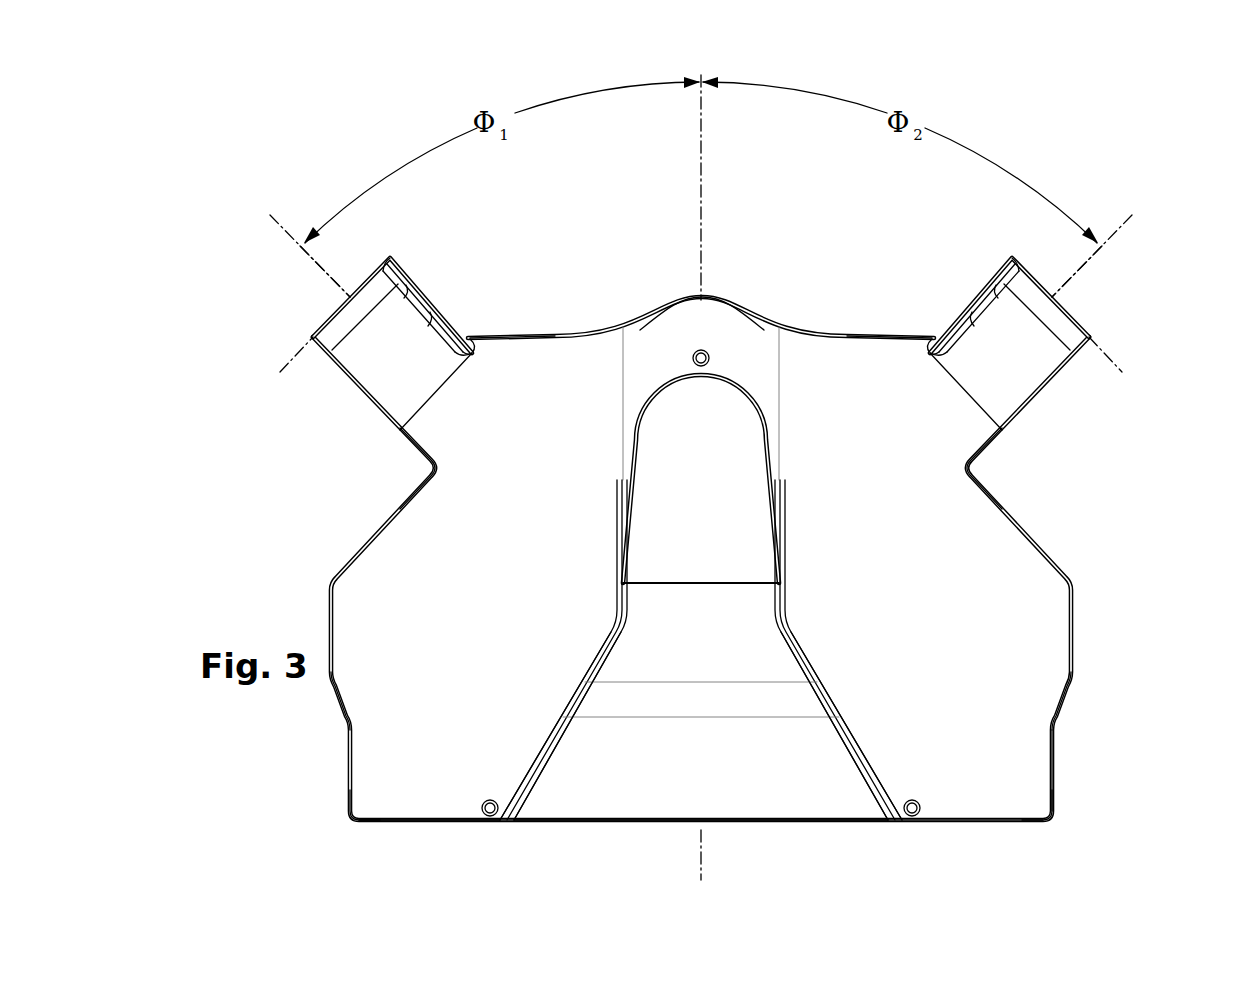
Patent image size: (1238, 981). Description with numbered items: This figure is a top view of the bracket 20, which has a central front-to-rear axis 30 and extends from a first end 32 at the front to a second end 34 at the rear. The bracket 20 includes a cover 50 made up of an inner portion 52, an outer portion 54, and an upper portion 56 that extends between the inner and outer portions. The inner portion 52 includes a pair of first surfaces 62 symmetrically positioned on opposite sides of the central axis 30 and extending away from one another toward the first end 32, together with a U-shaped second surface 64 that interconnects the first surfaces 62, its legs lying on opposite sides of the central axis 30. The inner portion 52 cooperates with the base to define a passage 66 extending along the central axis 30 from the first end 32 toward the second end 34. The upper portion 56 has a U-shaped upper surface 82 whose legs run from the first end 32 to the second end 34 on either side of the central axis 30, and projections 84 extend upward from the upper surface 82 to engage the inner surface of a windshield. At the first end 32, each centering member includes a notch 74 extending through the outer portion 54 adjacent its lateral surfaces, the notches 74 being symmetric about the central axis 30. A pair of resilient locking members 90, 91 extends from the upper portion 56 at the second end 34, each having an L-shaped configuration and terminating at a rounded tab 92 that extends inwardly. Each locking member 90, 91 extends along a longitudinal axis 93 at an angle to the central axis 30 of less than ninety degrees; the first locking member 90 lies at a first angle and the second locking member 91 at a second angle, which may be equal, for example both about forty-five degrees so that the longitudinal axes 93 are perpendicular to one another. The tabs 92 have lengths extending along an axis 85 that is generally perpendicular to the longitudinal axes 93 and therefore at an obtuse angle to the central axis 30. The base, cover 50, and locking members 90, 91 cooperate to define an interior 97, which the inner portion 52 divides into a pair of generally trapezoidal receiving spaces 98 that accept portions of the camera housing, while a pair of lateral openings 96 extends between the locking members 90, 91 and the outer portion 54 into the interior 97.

The bracket 20 is at (1105, 622).
The central front-to-rear axis 30 is at (703, 835).
The first end 32 is at (967, 827).
The second end 34 is at (640, 296).
The cover 50 is at (440, 773).
The inner portion 52 is at (800, 652).
The outer portion 54 is at (1060, 745).
The upper portion 56 is at (873, 345).
The first surfaces 62 is at (555, 742).
The second surface 64 is at (707, 380).
The passage 66 is at (648, 786).
The notch 74 is at (346, 793).
The upper surface 82 is at (720, 310).
The projections 84 is at (701, 345).
The axis 85 is at (425, 237).
The locking member 90 is at (395, 355).
The locking member 91 is at (1012, 370).
The tab 92 is at (314, 340).
The longitudinal axis 93 is at (287, 232).
The lateral openings 96 is at (384, 482).
The interior 97 is at (541, 387).
The receiving spaces 98 is at (426, 706).